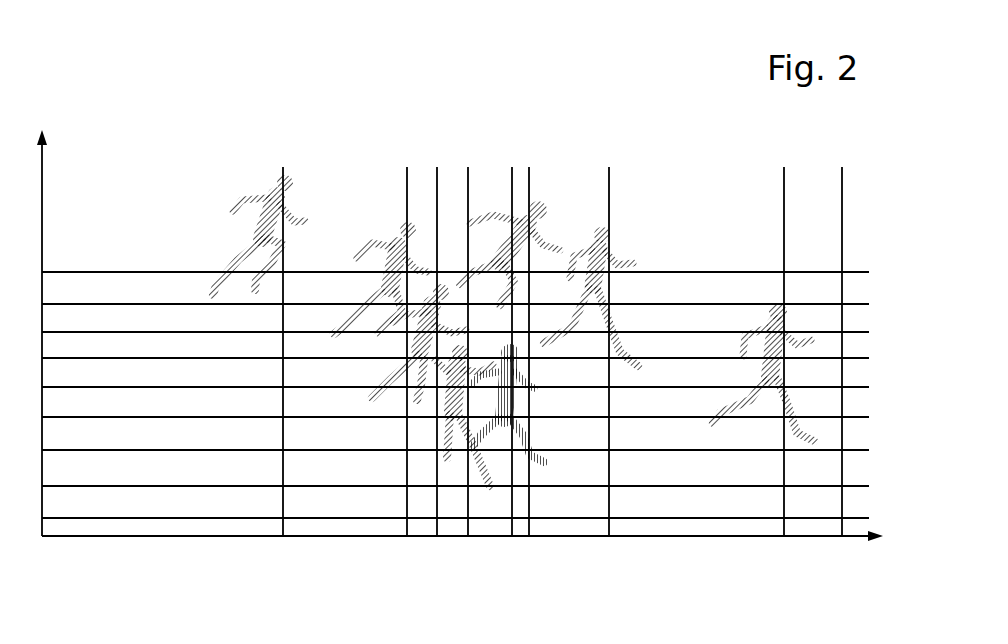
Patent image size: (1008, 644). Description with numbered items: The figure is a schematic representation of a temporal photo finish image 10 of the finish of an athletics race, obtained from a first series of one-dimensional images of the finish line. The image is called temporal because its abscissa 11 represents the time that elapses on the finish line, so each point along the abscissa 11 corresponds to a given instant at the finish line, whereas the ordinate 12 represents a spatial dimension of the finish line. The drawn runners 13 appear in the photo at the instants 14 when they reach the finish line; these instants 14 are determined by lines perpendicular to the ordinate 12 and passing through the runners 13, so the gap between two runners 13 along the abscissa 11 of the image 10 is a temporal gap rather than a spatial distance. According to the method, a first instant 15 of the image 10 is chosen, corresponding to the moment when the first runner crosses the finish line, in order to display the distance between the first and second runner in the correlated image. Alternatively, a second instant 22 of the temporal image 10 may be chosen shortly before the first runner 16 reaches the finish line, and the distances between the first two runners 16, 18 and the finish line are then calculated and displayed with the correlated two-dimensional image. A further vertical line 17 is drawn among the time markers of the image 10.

The temporal photo finish image 10 is at (86, 92).
The abscissa 11 is at (847, 538).
The ordinate 12 is at (42, 195).
The runners 13 is at (222, 293).
The instants 14 is at (466, 179).
The first instant 15 is at (783, 203).
The first runner 16 is at (798, 450).
The vertical line 17 is at (608, 190).
The second runner 18 is at (628, 262).
The second instant 22 is at (842, 200).